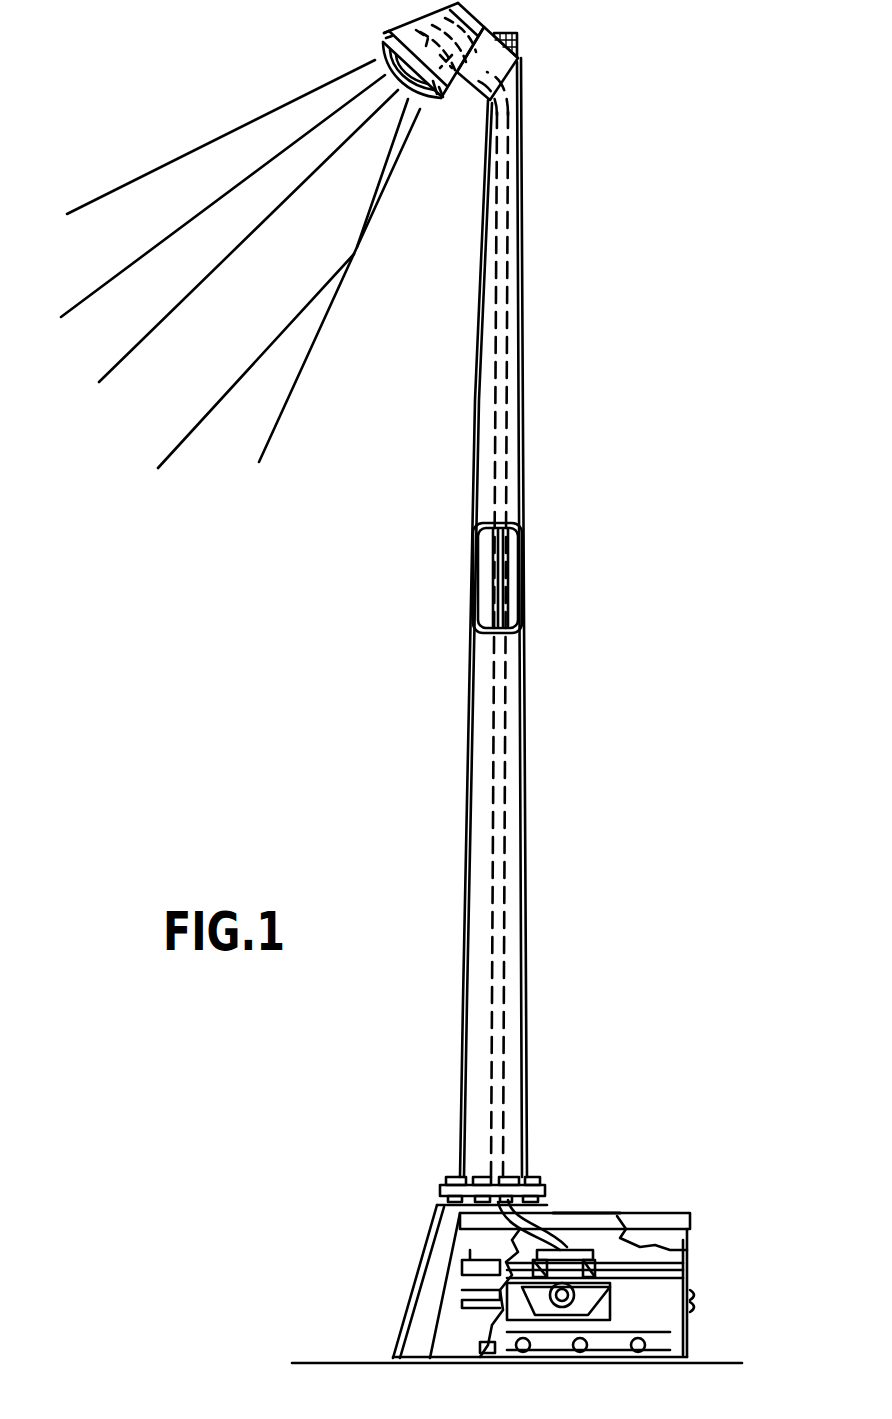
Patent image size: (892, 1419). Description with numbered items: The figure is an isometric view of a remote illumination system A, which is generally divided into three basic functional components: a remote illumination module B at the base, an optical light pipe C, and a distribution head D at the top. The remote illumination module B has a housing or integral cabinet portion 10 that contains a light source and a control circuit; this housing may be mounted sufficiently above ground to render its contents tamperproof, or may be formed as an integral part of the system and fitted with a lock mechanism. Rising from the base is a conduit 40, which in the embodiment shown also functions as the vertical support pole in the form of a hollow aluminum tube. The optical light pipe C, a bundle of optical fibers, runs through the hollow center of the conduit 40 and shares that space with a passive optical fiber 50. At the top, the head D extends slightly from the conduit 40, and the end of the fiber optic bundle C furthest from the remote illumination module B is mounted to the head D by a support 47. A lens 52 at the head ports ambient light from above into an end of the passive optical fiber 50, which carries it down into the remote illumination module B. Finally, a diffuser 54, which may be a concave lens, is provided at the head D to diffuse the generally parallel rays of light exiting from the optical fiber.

The remote illumination system A is at (536, 617).
The remote illumination module B is at (528, 1261).
The optical light pipe C is at (520, 586).
The distribution head D is at (450, 69).
The housing or integral cabinet portion 10 is at (690, 1222).
The conduit 40 is at (520, 1062).
The support 47 is at (458, 80).
The passive optical fiber 50 is at (517, 50).
The lens 52 is at (517, 37).
The diffuser 54 is at (381, 52).